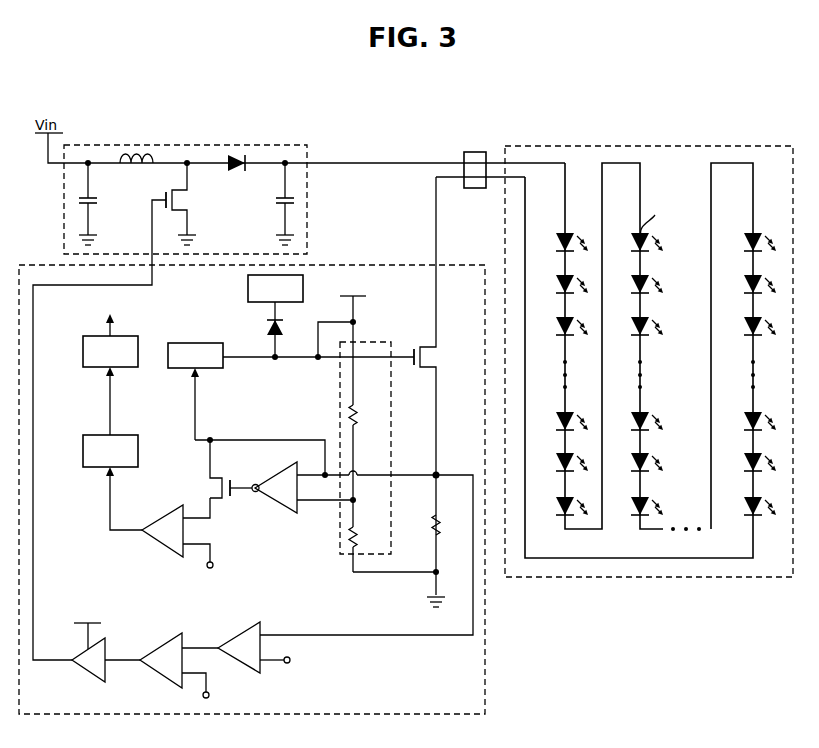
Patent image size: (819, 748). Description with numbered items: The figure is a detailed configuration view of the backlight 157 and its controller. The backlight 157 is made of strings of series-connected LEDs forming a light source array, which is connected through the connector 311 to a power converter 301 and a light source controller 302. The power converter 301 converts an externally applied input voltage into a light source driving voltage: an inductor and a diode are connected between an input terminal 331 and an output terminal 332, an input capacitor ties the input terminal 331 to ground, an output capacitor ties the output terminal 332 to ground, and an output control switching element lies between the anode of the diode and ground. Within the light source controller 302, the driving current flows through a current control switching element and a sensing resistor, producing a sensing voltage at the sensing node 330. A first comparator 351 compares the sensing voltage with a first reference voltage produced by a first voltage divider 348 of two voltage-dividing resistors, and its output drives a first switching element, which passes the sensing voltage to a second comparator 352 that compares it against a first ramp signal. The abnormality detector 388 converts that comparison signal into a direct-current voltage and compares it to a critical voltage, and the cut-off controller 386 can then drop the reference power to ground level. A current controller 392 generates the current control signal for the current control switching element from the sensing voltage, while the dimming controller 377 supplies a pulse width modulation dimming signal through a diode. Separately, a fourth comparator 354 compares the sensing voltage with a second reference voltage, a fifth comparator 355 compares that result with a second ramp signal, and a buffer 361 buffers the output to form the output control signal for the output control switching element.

The backlight 157 is at (650, 146).
The power converter 301 is at (186, 145).
The light source controller 302 is at (375, 265).
The connector 311 is at (474, 152).
The sensing node 330 is at (439, 473).
The input terminal 331 is at (88, 160).
The output terminal 332 is at (285, 160).
The first voltage divider 348 is at (340, 398).
The first comparator 351 is at (282, 509).
The second comparator 352 is at (164, 549).
The fourth comparator 354 is at (250, 624).
The fifth comparator 355 is at (160, 638).
The buffer 361 is at (84, 671).
The dimming controller 377 is at (248, 289).
The cut-off controller 386 is at (93, 367).
The abnormality detector 388 is at (93, 467).
The current controller 392 is at (194, 343).